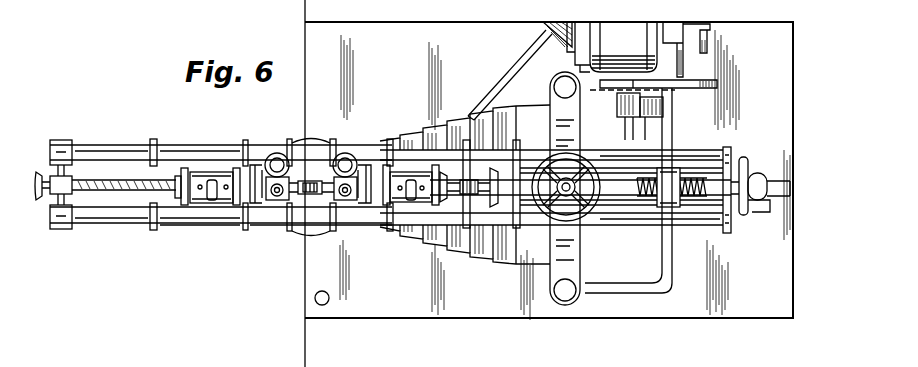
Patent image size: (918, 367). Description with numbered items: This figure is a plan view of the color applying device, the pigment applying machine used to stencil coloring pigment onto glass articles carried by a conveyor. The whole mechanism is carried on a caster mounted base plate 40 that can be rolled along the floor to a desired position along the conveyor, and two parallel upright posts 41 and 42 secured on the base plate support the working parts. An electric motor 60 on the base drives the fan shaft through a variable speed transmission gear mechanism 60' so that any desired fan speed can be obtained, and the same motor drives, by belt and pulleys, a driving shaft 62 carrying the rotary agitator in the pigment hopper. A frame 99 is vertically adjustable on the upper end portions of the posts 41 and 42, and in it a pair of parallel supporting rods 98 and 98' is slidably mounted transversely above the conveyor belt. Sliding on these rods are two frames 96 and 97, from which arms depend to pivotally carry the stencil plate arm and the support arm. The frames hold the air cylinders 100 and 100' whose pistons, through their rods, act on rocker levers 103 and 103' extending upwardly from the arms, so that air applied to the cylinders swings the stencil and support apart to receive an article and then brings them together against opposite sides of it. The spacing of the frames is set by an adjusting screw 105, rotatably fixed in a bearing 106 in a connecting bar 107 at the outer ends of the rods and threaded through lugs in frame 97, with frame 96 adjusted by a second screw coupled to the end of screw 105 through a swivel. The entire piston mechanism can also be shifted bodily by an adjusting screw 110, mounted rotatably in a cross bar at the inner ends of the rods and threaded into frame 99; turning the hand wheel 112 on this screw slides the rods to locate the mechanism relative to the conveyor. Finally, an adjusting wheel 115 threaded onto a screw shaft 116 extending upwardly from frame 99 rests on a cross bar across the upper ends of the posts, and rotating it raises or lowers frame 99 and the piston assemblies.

The base plate 40 is at (400, 307).
The upright post 41 is at (563, 300).
The upright post 42 is at (553, 88).
The electric motor 60 is at (630, 56).
The variable speed transmission gear mechanism 60' is at (668, 116).
The driving shaft 62 is at (525, 68).
The frame 96 is at (413, 220).
The frame 97 is at (177, 224).
The supporting rod 98 is at (221, 234).
The supporting rod 98' is at (221, 128).
The frame 99 is at (603, 226).
The cylinder 100 is at (411, 158).
The cylinder 100' is at (210, 159).
The rocker lever 103 is at (349, 207).
The rocker lever 103' is at (263, 214).
The adjusting screw 105 is at (92, 192).
The bearing 106 is at (60, 185).
The connecting bar 107 is at (58, 208).
The adjusting screw 110 is at (710, 180).
The hand wheel 112 is at (752, 155).
The adjusting wheel 115 is at (541, 209).
The screw shaft 116 is at (565, 192).